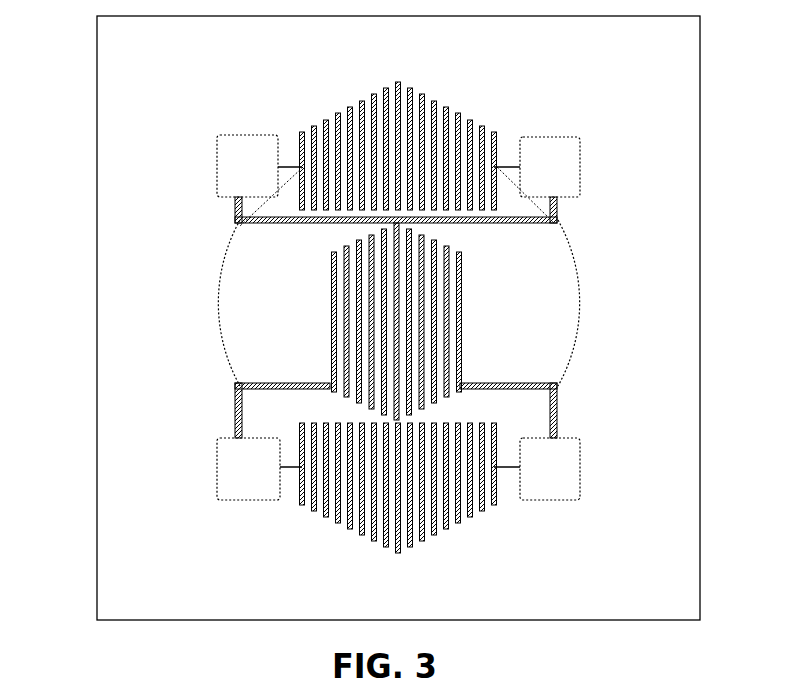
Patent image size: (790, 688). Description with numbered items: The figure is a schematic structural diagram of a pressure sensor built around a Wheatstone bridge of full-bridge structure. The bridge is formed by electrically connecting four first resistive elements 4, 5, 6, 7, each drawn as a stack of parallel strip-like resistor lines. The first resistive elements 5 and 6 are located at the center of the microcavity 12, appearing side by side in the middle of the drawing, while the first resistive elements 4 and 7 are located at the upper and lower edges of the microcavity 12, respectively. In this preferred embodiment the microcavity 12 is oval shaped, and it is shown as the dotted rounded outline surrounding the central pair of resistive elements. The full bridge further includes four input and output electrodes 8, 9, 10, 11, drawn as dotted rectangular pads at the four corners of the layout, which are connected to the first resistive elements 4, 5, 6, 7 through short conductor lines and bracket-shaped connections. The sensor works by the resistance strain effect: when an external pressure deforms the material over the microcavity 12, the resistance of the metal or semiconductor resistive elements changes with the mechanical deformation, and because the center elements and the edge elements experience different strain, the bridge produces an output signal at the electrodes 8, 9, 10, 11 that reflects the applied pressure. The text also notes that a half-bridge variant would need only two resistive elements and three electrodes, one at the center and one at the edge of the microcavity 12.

The first resistive element 4 is at (303, 198).
The first resistive element 5 is at (333, 308).
The first resistive element 6 is at (458, 315).
The first resistive element 7 is at (305, 450).
The input and output electrode 8 is at (245, 163).
The input and output electrode 9 is at (545, 165).
The input and output electrode 10 is at (540, 468).
The input and output electrode 11 is at (245, 468).
The microcavity 12 is at (218, 270).